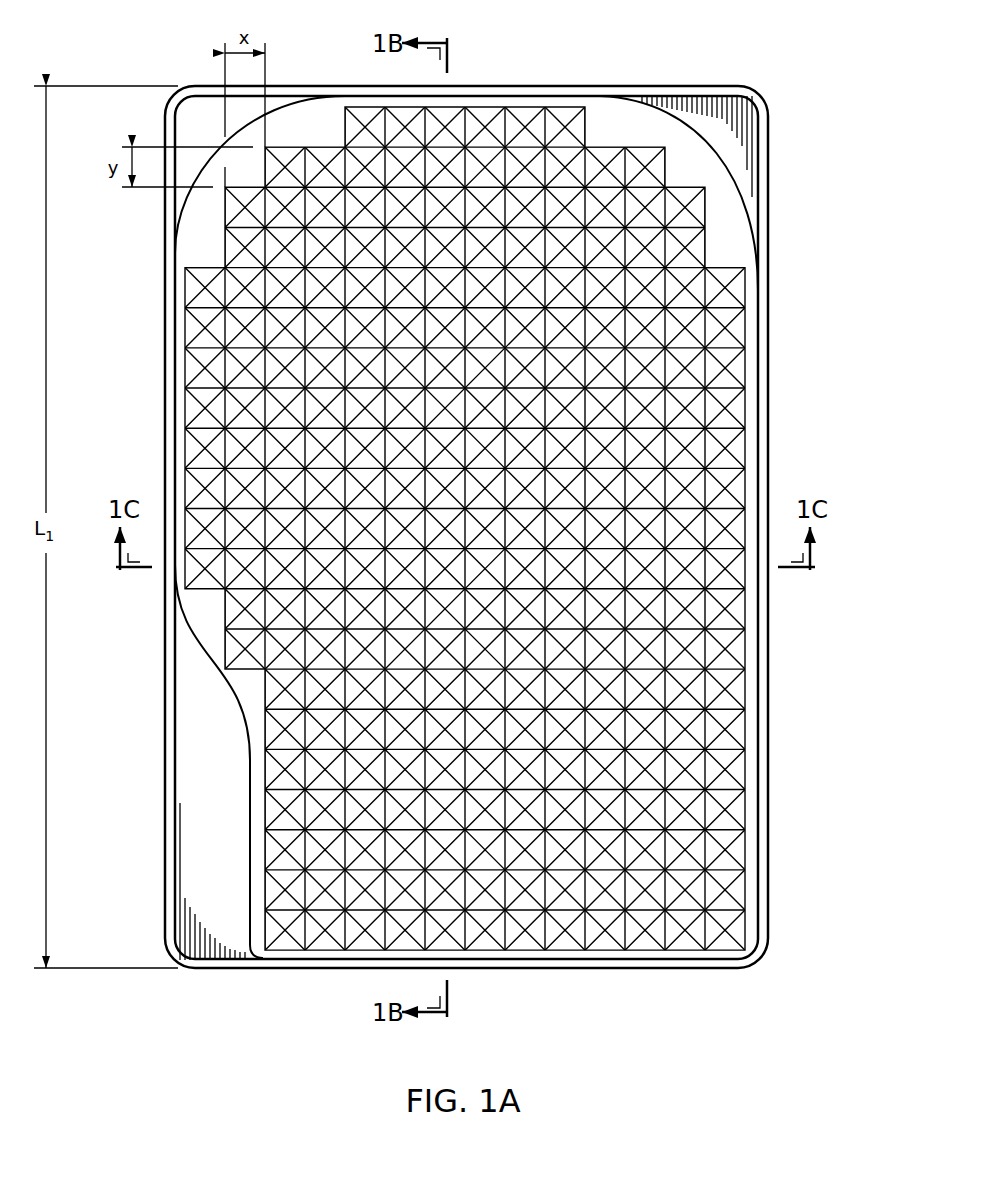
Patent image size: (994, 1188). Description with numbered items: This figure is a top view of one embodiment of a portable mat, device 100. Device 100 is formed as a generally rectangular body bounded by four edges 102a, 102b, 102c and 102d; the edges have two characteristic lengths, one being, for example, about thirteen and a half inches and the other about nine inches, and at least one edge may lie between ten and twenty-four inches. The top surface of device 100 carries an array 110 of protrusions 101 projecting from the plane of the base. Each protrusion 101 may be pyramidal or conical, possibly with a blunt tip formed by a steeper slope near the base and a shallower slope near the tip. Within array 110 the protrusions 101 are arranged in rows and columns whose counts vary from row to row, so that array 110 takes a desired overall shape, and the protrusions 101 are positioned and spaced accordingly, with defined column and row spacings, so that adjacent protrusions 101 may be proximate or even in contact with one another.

The device 100 is at (708, 56).
The protrusion 101 is at (740, 292).
The edge 102a is at (781, 475).
The edge 102b is at (489, 64).
The edge 102c is at (150, 474).
The edge 102d is at (489, 993).
The array 110 is at (608, 122).